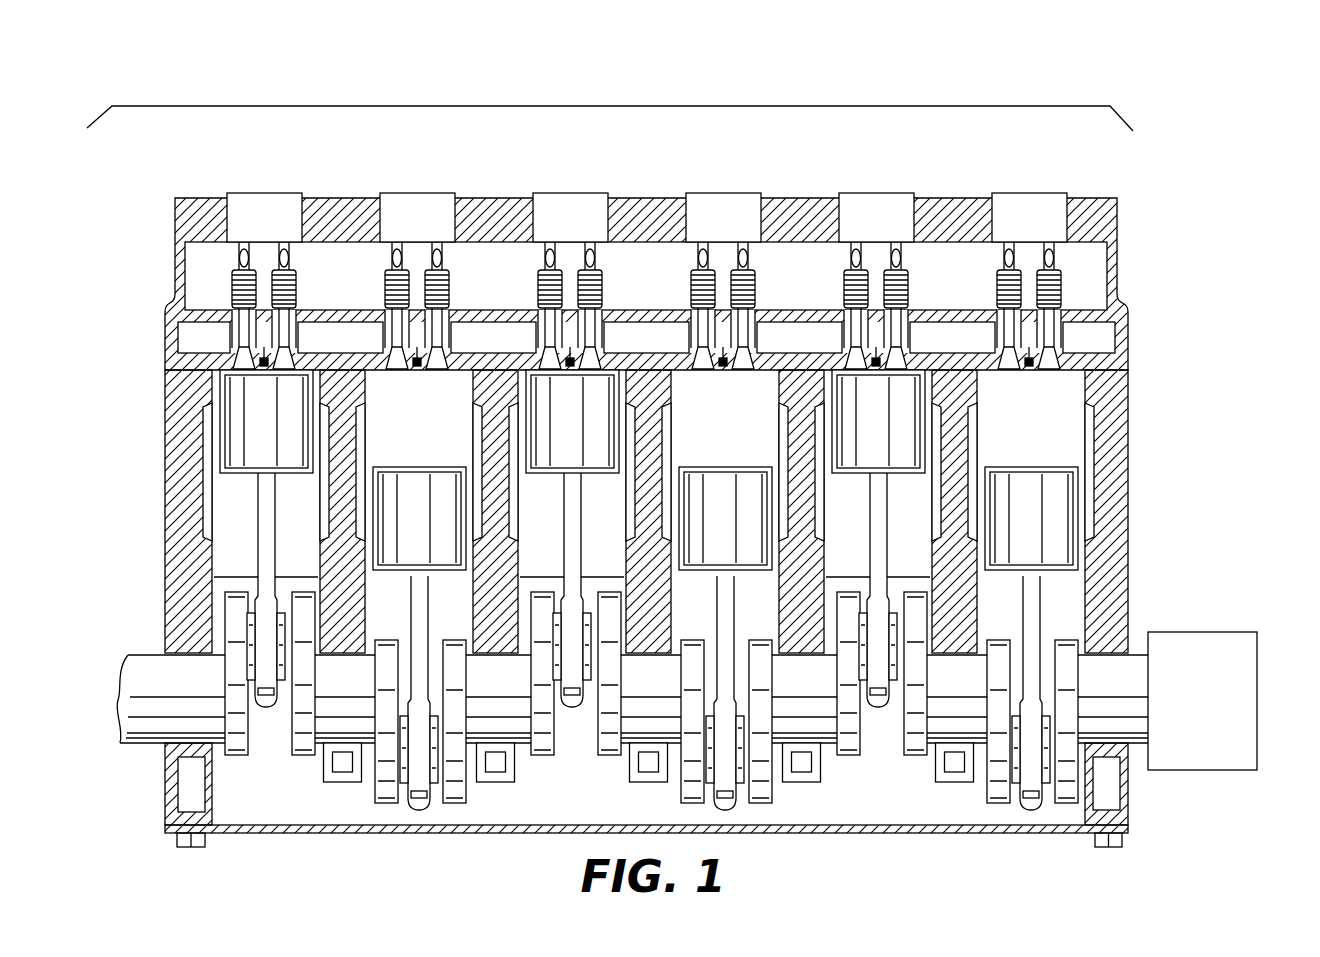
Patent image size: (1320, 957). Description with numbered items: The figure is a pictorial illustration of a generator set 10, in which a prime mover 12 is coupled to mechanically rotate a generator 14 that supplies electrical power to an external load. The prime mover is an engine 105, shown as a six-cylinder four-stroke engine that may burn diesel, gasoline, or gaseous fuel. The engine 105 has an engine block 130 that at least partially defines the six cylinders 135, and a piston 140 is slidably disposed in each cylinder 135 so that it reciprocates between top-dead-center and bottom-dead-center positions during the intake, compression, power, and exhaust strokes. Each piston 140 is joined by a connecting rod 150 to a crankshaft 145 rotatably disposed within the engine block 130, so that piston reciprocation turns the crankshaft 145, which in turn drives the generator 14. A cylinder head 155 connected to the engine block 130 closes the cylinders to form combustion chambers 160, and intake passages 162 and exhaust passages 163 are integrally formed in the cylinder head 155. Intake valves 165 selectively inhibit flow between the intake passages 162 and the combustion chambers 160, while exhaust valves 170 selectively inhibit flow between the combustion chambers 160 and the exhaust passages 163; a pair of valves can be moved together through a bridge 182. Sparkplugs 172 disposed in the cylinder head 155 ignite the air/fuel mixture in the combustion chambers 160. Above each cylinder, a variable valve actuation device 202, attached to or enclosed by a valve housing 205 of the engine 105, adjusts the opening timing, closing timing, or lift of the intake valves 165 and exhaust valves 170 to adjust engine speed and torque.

The generator set 10 is at (1150, 122).
The prime mover 12 is at (609, 104).
The generator 14 is at (1191, 712).
The engine 105 is at (629, 274).
The engine block 130 is at (618, 608).
The cylinder 135 is at (648, 489).
The piston 140 is at (1046, 530).
The crankshaft 145 is at (152, 667).
The connecting rod 150 is at (661, 641).
The cylinder head 155 is at (1122, 335).
The combustion chamber 160 is at (1046, 450).
The intake passage 162 is at (967, 350).
The exhaust passage 163 is at (1104, 350).
The intake valve 165 is at (630, 288).
The exhaust valve 170 is at (647, 305).
The sparkplug 172 is at (660, 374).
The bridge 182 is at (618, 257).
The variable valve actuation device 202 is at (1045, 230).
The valve housing 205 is at (207, 220).